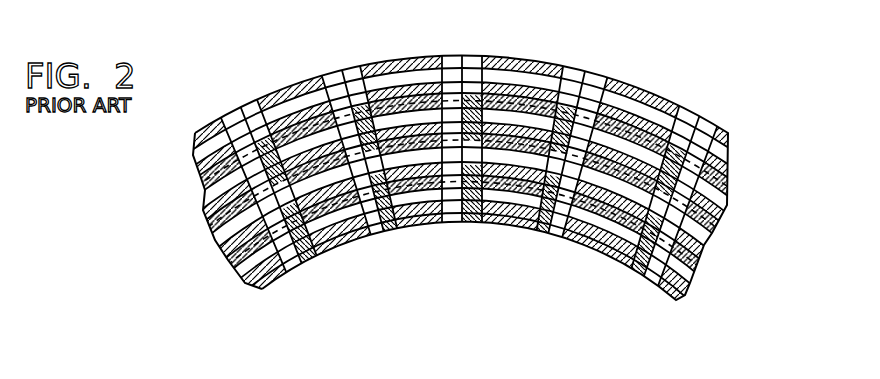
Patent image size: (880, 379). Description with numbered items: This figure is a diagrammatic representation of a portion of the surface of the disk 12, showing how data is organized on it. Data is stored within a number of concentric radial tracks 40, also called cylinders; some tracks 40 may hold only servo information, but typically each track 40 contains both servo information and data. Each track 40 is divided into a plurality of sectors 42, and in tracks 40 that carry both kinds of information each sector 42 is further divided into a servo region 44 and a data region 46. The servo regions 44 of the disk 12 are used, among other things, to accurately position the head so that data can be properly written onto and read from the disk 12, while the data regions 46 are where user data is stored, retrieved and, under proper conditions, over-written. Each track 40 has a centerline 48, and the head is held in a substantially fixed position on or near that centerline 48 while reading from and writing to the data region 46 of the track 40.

The disk 12 is at (440, 192).
The track 40 is at (440, 223).
The sector 42 is at (440, 203).
The servo region 44 is at (468, 162).
The data region 46 is at (468, 162).
The centerline 48 is at (226, 272).